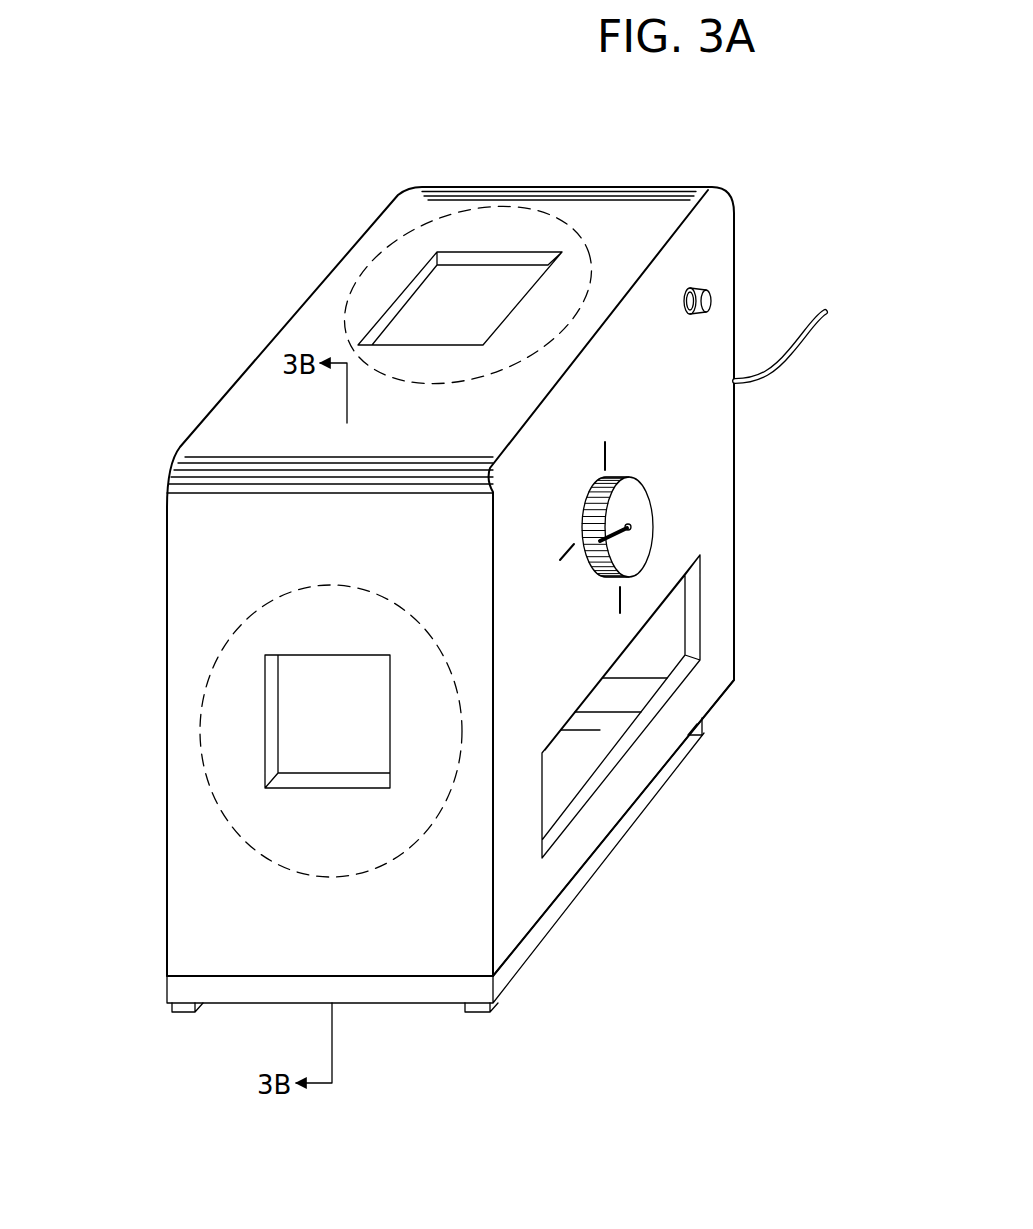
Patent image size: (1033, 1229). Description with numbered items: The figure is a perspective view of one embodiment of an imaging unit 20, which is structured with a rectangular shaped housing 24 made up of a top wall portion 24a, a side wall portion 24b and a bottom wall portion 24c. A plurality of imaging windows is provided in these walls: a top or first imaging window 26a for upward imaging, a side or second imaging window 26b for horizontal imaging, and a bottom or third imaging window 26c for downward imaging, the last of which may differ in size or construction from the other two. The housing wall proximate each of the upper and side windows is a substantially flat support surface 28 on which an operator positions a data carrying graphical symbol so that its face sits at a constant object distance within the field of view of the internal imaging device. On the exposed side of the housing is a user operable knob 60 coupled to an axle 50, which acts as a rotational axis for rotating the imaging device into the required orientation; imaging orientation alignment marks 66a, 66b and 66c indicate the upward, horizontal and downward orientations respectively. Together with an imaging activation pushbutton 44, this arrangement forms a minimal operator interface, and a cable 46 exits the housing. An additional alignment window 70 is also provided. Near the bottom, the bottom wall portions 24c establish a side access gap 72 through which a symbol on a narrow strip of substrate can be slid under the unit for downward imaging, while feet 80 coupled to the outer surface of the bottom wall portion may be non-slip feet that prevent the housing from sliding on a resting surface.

The imaging unit 20 is at (143, 245).
The housing 24 is at (165, 435).
The top wall portion 24a is at (410, 207).
The side wall portion 24b is at (178, 827).
The bottom wall portion 24c is at (380, 1000).
The top or first imaging window 26a is at (474, 300).
The side or second imaging window 26b is at (345, 747).
The bottom or third imaging window 26c is at (580, 760).
The support surface 28 is at (598, 245).
The pushbutton 44 is at (712, 300).
The cable 46 is at (748, 383).
The rotational axis (axle or shaft) 50 is at (634, 526).
The knob 60 is at (632, 495).
The first imaging orientation alignment mark 66a is at (603, 452).
The second imaging orientation alignment mark 66b is at (566, 548).
The third imaging orientation alignment mark 66c is at (617, 600).
The additional alignment window 70 is at (592, 680).
The side access gap 72 is at (592, 874).
The feet 80 is at (480, 1013).